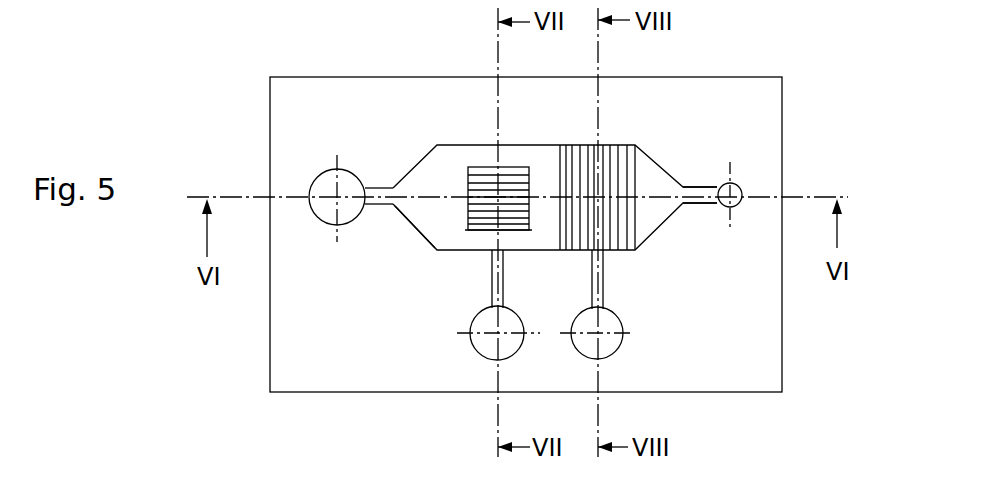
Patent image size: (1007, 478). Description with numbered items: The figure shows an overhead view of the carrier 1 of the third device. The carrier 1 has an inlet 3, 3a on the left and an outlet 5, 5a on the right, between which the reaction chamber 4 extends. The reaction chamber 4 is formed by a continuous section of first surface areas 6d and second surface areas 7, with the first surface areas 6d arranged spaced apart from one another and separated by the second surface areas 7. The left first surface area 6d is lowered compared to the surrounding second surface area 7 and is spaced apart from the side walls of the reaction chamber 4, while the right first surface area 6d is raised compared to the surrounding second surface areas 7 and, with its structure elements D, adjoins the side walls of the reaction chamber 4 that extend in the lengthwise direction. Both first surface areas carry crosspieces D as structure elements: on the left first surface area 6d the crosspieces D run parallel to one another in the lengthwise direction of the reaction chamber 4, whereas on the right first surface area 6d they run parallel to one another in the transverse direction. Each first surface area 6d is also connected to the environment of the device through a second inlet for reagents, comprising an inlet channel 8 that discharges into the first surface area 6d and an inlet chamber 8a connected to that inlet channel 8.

The carrier 1 is at (798, 96).
The inlet 3 is at (380, 193).
The inlet 3a is at (332, 182).
The reaction chamber 4 is at (427, 173).
The outlet 5 is at (702, 195).
The outlet 5a is at (740, 188).
The first surface area 6d is at (467, 230).
The second surface area 7 is at (427, 236).
The inlet channel 8 is at (495, 268).
The inlet chamber 8a is at (487, 343).
The crosspieces D is at (476, 170).